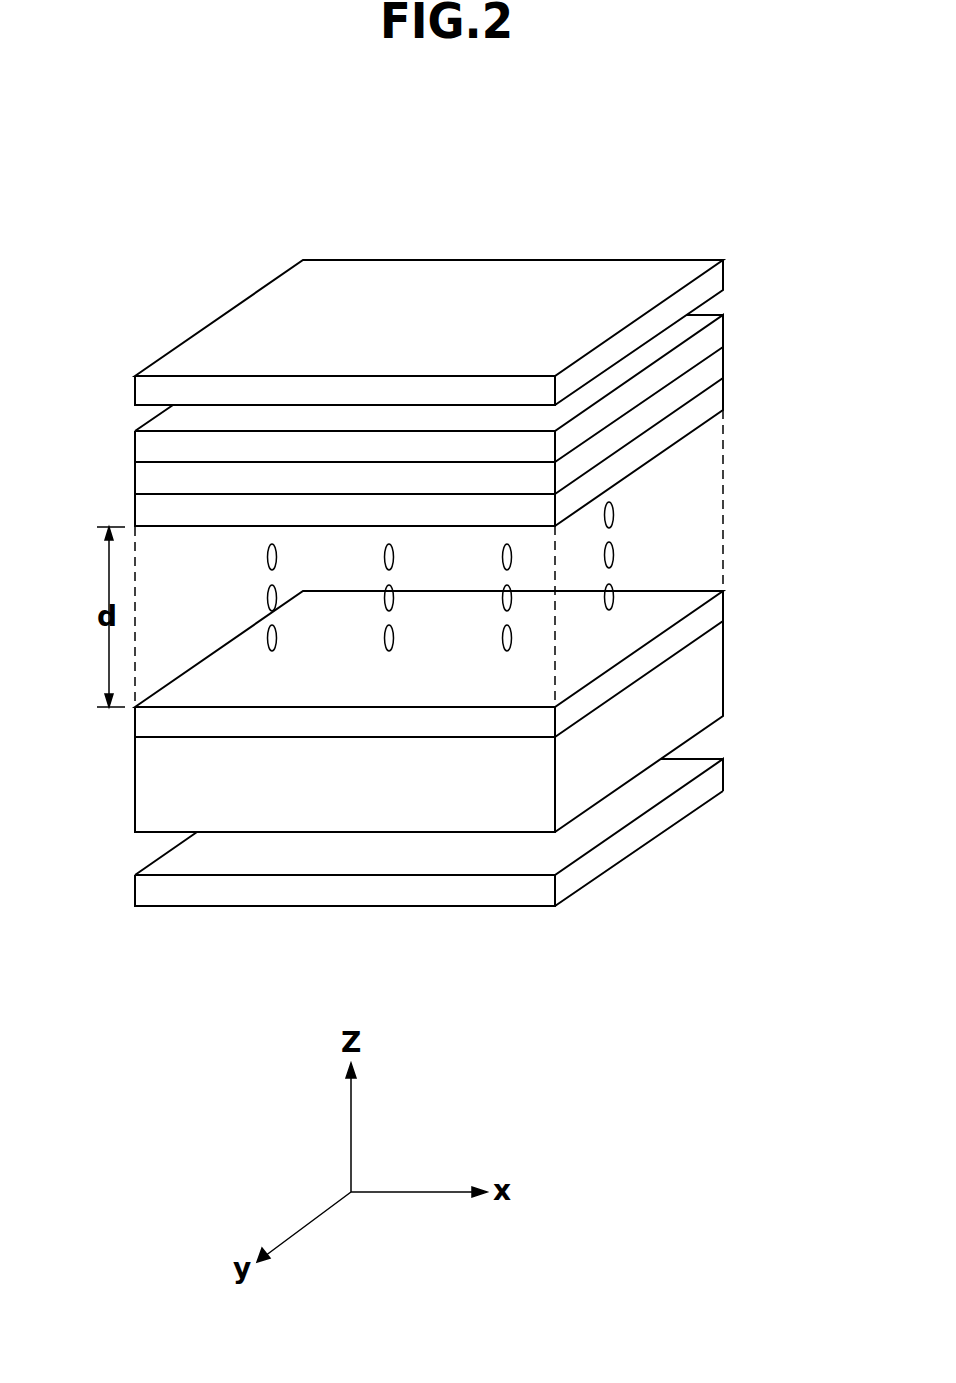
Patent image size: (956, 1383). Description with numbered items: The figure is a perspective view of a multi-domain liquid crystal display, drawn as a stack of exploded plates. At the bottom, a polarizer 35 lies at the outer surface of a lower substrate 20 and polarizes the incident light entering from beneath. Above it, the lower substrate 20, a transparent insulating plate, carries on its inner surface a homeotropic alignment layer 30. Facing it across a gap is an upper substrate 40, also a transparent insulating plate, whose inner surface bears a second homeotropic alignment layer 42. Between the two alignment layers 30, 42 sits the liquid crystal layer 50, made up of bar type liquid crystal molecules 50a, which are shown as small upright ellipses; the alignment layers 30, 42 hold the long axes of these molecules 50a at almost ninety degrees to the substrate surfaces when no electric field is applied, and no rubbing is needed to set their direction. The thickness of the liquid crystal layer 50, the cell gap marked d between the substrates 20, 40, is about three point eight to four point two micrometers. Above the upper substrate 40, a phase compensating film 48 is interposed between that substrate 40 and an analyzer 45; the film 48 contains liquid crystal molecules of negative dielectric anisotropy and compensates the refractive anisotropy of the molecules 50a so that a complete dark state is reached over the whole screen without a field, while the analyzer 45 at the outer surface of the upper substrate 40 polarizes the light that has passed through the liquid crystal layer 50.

The analyzer 45 is at (716, 282).
The phase compensating film 48 is at (716, 340).
The upper substrate 40 is at (716, 372).
The homeotropic alignment layer 42 is at (716, 402).
The liquid crystal layer 50 is at (717, 452).
The liquid crystal molecule 50a is at (612, 552).
The homeotropic alignment layer 30 is at (718, 612).
The lower substrate 20 is at (718, 685).
The polarizer 35 is at (719, 781).